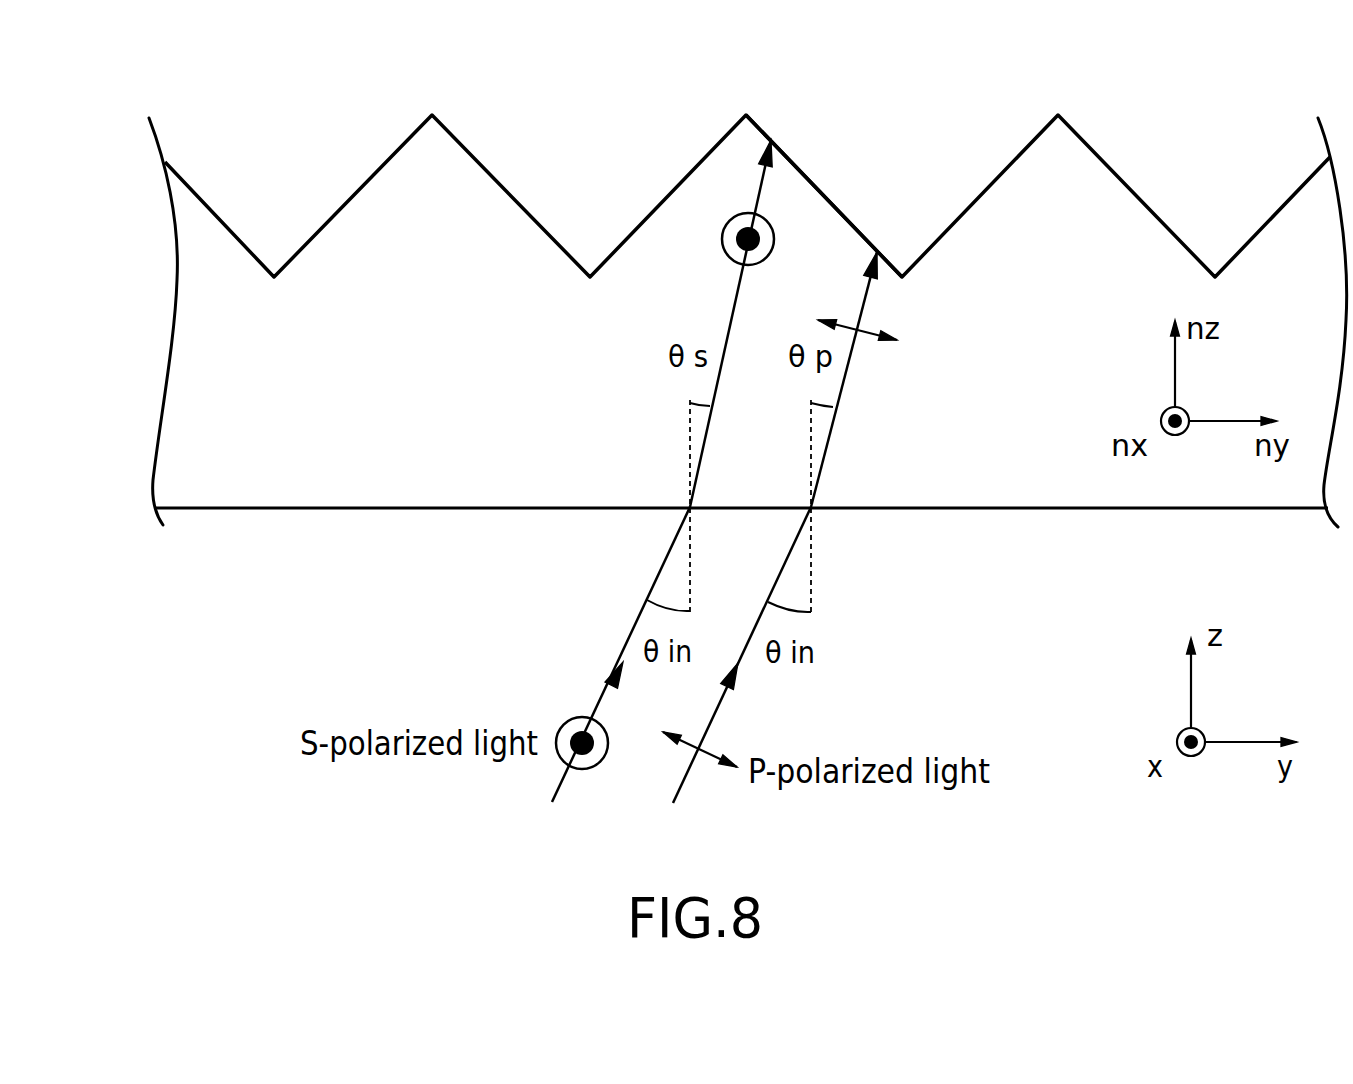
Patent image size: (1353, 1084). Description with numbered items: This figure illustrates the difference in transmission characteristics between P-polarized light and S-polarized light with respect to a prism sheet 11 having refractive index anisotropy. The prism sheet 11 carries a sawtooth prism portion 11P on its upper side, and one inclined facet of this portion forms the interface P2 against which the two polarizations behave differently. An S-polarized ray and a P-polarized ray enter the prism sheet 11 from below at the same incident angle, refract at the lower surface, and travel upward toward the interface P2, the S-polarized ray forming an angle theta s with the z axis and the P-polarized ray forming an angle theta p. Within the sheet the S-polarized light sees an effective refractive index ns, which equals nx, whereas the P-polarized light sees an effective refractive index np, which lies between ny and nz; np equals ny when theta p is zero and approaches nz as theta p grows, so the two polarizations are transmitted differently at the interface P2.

The prism sheet 11 is at (200, 343).
The prism portion 11P is at (441, 236).
The interface P2 is at (822, 188).
The effective refractive index of S-polarized light ns is at (733, 242).
The effective refractive index of P-polarized light np is at (860, 330).